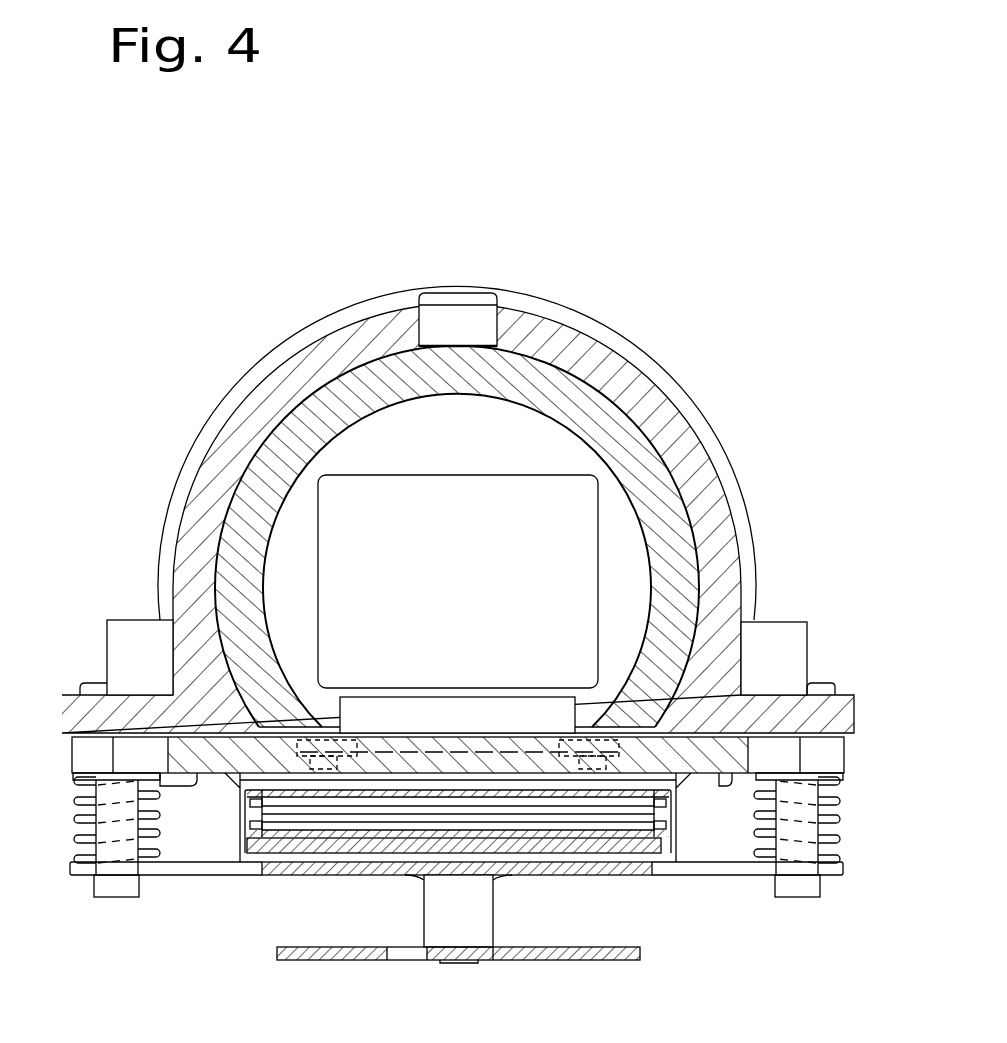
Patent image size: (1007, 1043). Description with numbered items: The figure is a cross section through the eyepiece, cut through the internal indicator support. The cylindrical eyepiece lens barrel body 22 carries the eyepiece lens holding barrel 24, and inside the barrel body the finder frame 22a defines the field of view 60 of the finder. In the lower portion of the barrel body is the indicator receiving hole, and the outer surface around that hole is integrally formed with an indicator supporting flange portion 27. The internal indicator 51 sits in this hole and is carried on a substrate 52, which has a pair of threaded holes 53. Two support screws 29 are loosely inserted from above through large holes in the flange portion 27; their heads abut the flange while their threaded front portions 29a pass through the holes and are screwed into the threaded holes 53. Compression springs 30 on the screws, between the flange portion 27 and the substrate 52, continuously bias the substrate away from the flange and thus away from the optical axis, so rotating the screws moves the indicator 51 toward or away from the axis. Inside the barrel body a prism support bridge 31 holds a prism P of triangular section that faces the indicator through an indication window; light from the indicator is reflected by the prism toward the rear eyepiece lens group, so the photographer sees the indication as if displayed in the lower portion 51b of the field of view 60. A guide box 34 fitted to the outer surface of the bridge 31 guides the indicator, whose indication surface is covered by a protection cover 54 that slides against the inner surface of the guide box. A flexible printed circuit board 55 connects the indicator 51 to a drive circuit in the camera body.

The eyepiece lens barrel body 22 is at (522, 332).
The eyepiece lens holding barrel 24 is at (556, 388).
The finder frame 22a is at (574, 462).
The field of view 60 is at (566, 530).
The lower portion of the field of view 51b is at (548, 703).
The prism P is at (771, 542).
The support screw 29 is at (94, 686).
The indicator supporting flange portion 27 is at (58, 714).
The guide box 34 is at (830, 720).
The prism support bridge 31 is at (742, 754).
The compression spring 30 is at (75, 857).
The threaded front portion 29a is at (115, 885).
The threaded hole 53 is at (112, 882).
The protection cover 54 is at (249, 836).
The internal indicator 51 is at (272, 816).
The substrate 52 is at (278, 876).
The flexible printed circuit board 55 is at (668, 876).